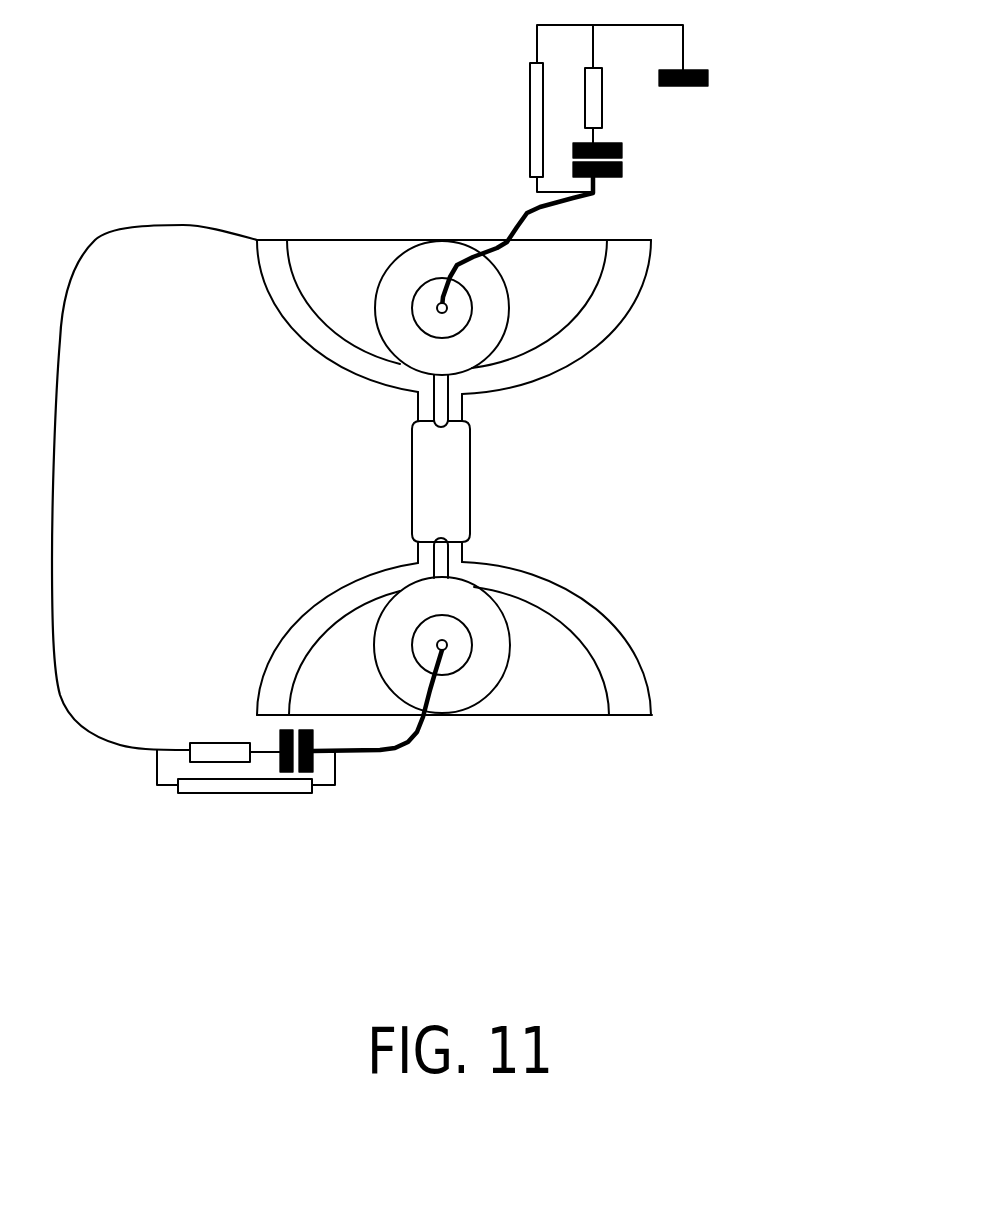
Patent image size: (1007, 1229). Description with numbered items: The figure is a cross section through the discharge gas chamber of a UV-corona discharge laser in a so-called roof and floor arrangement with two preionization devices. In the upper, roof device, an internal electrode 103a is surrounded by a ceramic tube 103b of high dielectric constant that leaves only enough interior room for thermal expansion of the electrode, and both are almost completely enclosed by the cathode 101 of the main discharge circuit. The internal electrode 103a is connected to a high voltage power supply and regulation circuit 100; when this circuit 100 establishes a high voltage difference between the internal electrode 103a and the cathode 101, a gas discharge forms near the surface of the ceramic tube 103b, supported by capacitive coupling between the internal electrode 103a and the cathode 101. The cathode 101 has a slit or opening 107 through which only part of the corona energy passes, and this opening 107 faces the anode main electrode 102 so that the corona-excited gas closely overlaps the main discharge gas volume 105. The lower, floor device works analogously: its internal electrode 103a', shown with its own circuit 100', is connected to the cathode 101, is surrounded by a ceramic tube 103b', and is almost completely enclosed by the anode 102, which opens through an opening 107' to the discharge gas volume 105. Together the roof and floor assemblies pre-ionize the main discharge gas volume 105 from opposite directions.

The high voltage power supply and regulation circuit 100 is at (477, 108).
The power supply circuit of the floor preionization device 100' is at (238, 826).
The cathode 101 is at (645, 284).
The anode main electrode 102 is at (665, 680).
The internal electrode 103a is at (308, 318).
The ceramic tube 103b is at (373, 266).
The internal electrode 103a' is at (604, 705).
The ceramic tube 103b' is at (477, 710).
The discharge gas volume 105 is at (468, 481).
The slit/window/opening 107 is at (627, 401).
The opening 107' is at (633, 578).